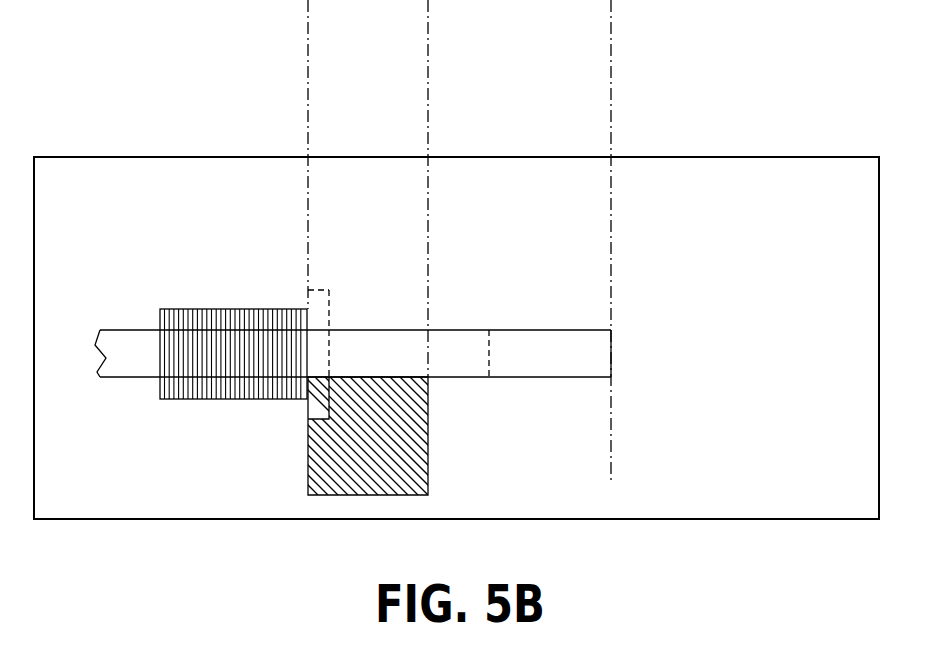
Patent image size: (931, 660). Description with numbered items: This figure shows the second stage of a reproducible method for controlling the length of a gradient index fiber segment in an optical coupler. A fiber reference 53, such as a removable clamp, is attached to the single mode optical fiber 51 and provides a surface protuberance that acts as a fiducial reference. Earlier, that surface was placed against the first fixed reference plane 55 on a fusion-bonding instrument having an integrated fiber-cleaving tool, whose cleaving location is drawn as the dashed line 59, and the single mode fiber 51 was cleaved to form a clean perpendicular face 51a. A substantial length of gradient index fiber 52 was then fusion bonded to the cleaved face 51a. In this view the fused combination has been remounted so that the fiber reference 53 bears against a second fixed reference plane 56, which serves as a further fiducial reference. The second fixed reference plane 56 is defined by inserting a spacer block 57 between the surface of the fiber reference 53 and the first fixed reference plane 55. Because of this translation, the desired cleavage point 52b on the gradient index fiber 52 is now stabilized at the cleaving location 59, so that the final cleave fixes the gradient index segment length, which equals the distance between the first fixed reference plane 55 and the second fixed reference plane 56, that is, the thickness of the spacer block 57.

The single mode optical fiber 51 is at (388, 369).
The cleaved face 51a is at (489, 347).
The gradient index fiber 52 is at (556, 369).
The cleavage point 52b is at (592, 330).
The fiber reference 53 is at (228, 309).
The first fixed reference plane 55 is at (428, 107).
The second fixed reference plane 56 is at (308, 107).
The spacer block 57 is at (325, 452).
The cleaving location 59 is at (611, 107).